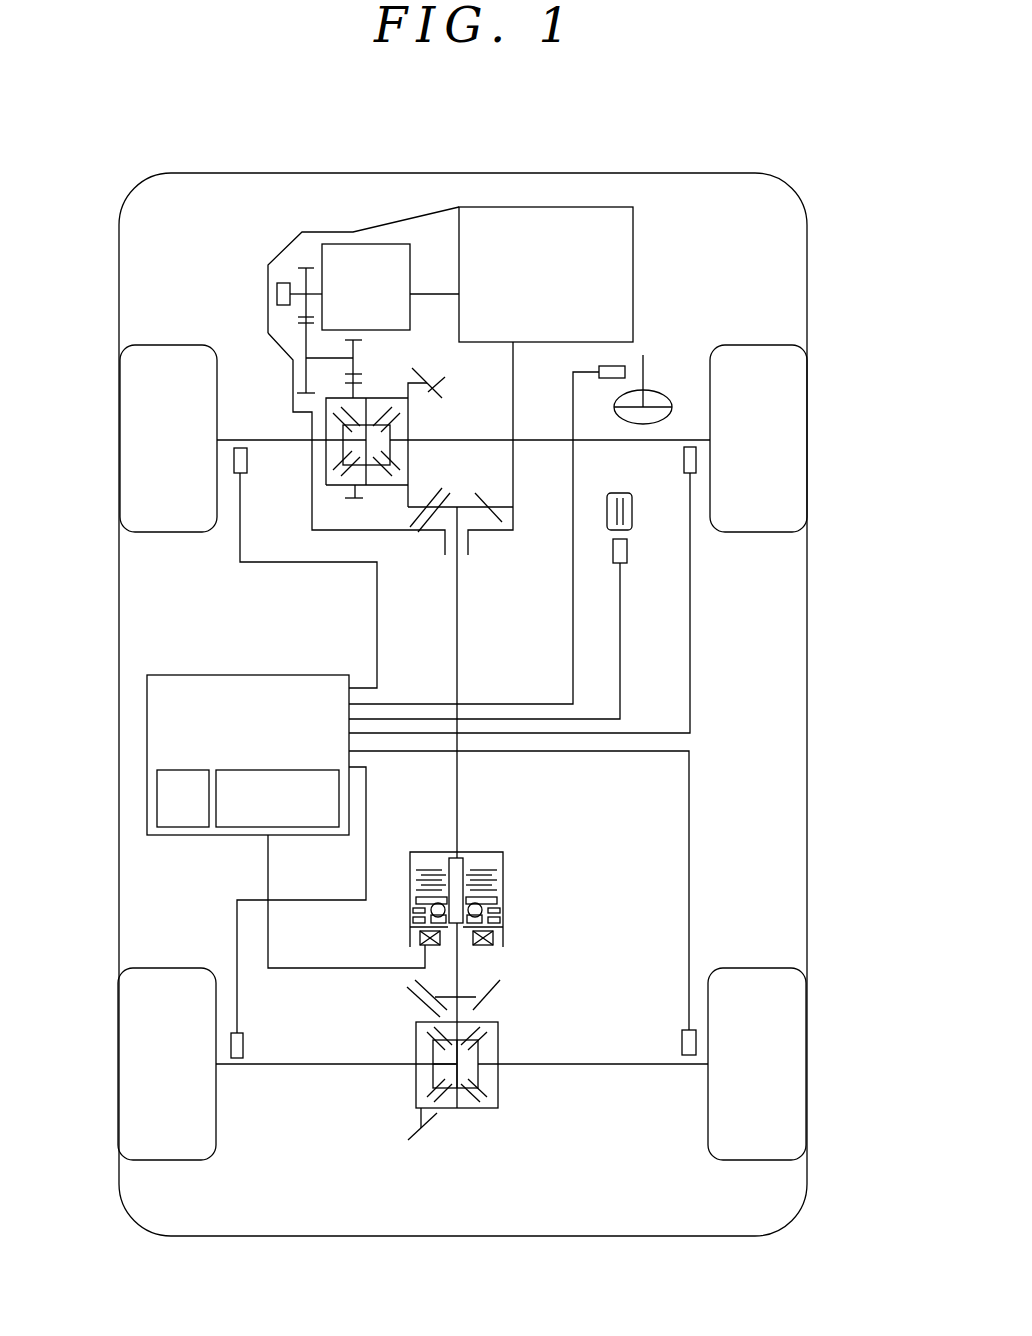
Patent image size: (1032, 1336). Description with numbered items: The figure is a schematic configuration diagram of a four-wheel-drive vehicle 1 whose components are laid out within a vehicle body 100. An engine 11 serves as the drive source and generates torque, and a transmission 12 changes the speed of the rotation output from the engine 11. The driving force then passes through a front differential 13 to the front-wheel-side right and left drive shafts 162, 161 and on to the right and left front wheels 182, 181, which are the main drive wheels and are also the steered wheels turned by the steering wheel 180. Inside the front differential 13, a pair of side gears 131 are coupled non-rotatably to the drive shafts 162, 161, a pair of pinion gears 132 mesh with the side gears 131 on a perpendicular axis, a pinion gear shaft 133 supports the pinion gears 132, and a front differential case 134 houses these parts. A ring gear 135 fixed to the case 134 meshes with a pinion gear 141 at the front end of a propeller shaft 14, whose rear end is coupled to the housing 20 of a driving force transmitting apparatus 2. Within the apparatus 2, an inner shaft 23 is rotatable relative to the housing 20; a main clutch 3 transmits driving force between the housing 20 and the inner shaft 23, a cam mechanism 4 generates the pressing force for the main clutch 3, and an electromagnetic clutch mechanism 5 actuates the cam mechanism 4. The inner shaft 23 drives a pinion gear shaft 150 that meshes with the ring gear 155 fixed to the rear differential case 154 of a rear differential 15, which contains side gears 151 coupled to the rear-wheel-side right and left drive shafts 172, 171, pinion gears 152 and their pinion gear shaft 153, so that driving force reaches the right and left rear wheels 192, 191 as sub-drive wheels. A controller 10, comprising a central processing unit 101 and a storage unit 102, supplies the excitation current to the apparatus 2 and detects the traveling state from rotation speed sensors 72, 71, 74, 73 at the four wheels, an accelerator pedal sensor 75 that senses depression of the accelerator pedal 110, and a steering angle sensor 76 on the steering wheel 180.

The four-wheel-drive vehicle 1 is at (740, 126).
The vehicle body 100 is at (808, 297).
The engine 11 is at (581, 207).
The transmission 12 is at (358, 244).
The front differential 13 is at (361, 437).
The side gears 131 is at (357, 452).
The pinion gears 132 is at (373, 415).
The pinion gear shaft 133 is at (365, 440).
The front differential case 134 is at (334, 395).
The ring gear 135 is at (443, 373).
The propeller shaft 14 is at (460, 632).
The pinion gear 141 is at (493, 512).
The rear differential 15 is at (461, 1071).
The pinion gear shaft 150 is at (457, 970).
The side gears 151 is at (477, 1055).
The pinion gears 152 is at (482, 1028).
The pinion gear shaft 153 is at (456, 1060).
The rear differential case 154 is at (475, 1107).
The ring gear 155 is at (412, 993).
The front-wheel-side left drive shaft 161 is at (280, 440).
The front-wheel-side right drive shaft 162 is at (465, 437).
The rear-wheel-side left drive shaft 171 is at (333, 1068).
The rear-wheel-side right drive shaft 172 is at (643, 1068).
The left front wheel 181 is at (133, 410).
The right front wheel 182 is at (797, 415).
The left rear wheel 191 is at (130, 1088).
The right rear wheel 192 is at (797, 1087).
The steering wheel 180 is at (656, 392).
The accelerator pedal 110 is at (619, 493).
The controller 10 is at (282, 795).
The central processing unit 101 is at (172, 827).
The storage unit 102 is at (238, 827).
The driving force transmitting apparatus 2 is at (461, 867).
The housing 20 is at (433, 852).
The inner shaft 23 is at (458, 860).
The main clutch 3 is at (497, 870).
The cam mechanism 4 is at (417, 904).
The electromagnetic clutch mechanism 5 is at (500, 921).
The rotation speed sensor 71 is at (240, 448).
The rotation speed sensor 72 is at (689, 447).
The rotation speed sensor 73 is at (243, 1040).
The rotation speed sensor 74 is at (683, 1033).
The accelerator pedal sensor 75 is at (613, 558).
The steering angle sensor 76 is at (623, 365).